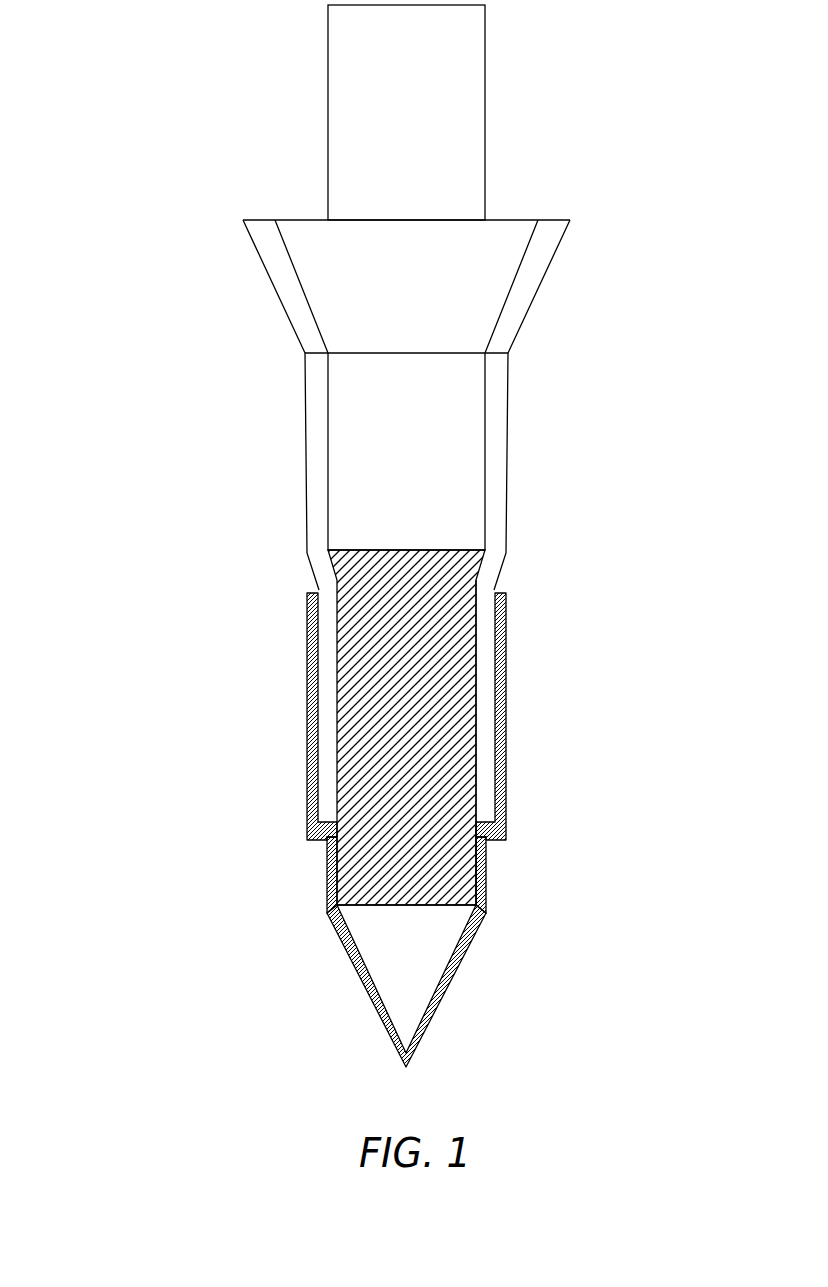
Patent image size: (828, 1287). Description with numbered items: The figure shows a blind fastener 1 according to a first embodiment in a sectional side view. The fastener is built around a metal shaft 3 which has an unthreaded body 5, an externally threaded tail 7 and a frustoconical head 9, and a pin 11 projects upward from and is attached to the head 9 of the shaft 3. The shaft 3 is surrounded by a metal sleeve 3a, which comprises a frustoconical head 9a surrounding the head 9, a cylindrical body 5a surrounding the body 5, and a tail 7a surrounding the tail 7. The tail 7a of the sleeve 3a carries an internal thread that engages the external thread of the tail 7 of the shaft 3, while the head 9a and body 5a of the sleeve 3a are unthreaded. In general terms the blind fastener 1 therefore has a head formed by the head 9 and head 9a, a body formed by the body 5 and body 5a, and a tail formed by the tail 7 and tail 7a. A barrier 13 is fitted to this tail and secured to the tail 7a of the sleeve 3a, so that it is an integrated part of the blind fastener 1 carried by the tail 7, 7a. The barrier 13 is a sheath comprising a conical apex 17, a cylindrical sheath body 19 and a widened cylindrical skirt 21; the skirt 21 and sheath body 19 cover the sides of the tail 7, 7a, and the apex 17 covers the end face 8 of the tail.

The blind fastener 1 is at (369, 544).
The metal shaft 3 is at (440, 328).
The metal sleeve 3a is at (255, 207).
The unthreaded body 5 is at (445, 426).
The cylindrical body 5a is at (500, 483).
The externally threaded tail 7 is at (494, 778).
The tail 7a is at (485, 653).
The end face 8 is at (405, 905).
The frustoconical head 9 is at (463, 296).
The frustoconical head 9a is at (537, 265).
The pin 11 is at (420, 133).
The barrier 13 is at (368, 960).
The conical apex 17 is at (432, 1020).
The cylindrical sheath body 19 is at (328, 868).
The widened cylindrical skirt 21 is at (310, 732).